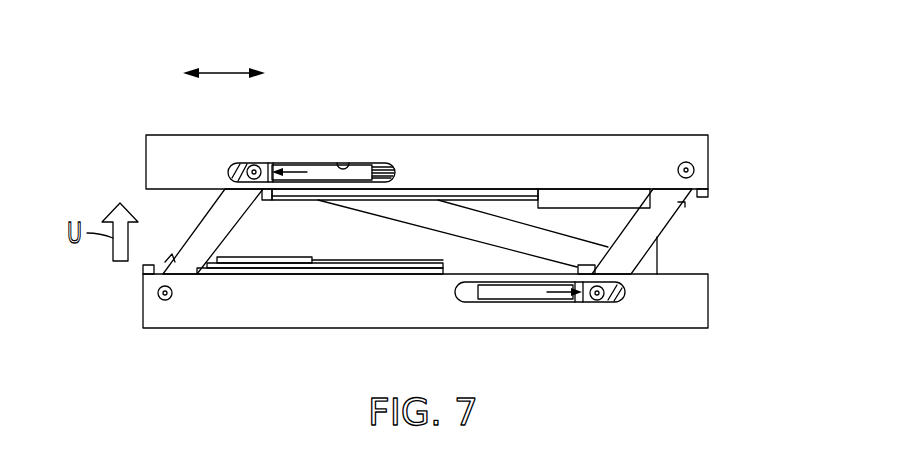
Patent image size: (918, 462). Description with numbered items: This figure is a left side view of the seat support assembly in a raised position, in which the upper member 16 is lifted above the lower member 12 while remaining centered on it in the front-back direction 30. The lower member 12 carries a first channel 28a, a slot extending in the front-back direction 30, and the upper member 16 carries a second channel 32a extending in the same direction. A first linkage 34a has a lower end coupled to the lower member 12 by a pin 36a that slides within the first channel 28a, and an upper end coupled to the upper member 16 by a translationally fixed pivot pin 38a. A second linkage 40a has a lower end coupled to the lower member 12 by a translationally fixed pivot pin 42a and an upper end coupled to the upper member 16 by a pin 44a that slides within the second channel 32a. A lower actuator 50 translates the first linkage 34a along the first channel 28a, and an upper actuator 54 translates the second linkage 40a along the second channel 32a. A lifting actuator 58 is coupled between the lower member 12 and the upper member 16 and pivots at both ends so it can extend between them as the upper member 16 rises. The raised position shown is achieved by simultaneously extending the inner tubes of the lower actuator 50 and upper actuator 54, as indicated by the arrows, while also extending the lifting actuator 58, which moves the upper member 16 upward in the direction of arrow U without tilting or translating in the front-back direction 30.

The lower member 12 is at (675, 318).
The upper member 16 is at (595, 147).
The first channel 28a is at (550, 297).
The front-back direction 30 is at (223, 73).
The second channel 32a is at (346, 163).
The first linkage 34a is at (652, 217).
The pin 36a is at (601, 300).
The pin 38a is at (691, 163).
The second linkage 40a is at (229, 210).
The pin 42a is at (169, 298).
The pin 44a is at (251, 166).
The lower actuator 50 is at (246, 272).
The upper actuator 54 is at (492, 190).
The lifting actuator 58 is at (412, 236).